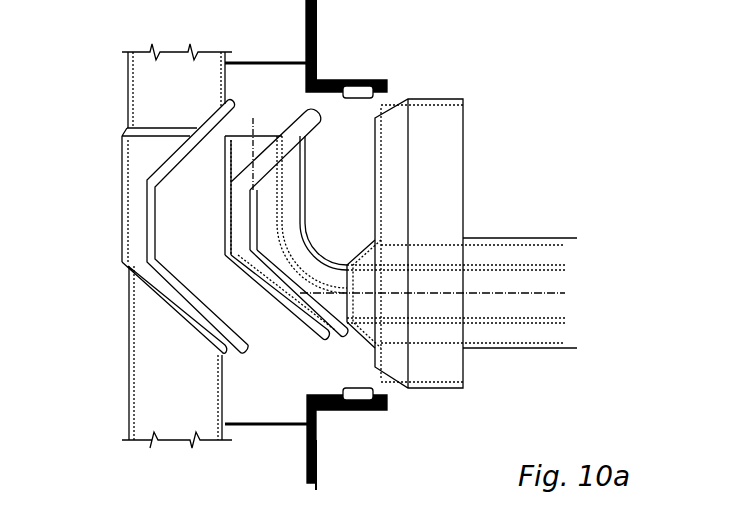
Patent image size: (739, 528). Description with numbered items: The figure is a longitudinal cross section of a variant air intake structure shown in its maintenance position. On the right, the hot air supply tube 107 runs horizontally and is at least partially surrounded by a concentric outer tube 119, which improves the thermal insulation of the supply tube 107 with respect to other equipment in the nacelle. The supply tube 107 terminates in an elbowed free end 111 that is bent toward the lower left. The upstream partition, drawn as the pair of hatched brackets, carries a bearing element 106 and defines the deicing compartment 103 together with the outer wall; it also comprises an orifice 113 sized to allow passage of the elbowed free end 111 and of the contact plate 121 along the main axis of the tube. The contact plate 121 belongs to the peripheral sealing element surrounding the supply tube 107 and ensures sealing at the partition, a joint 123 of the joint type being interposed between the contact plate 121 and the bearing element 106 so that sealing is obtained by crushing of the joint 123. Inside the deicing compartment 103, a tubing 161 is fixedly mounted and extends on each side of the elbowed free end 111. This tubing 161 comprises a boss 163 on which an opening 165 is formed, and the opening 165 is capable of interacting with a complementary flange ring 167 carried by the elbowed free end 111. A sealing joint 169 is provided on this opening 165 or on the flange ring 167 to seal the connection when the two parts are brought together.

The deicing compartment 103 is at (97, 70).
The tubing 161 is at (128, 100).
The boss 163 is at (128, 226).
The elbowed free end 111 is at (210, 165).
The opening 165 is at (200, 298).
The bearing element 106 is at (313, 53).
The joint 123 is at (377, 93).
The orifice 113 is at (372, 105).
The flange ring 167 is at (290, 160).
The contact plate 121 is at (375, 207).
The outer tube 119 is at (493, 237).
The hot air supply tube 107 is at (542, 270).
The sealing joint 169 is at (325, 333).